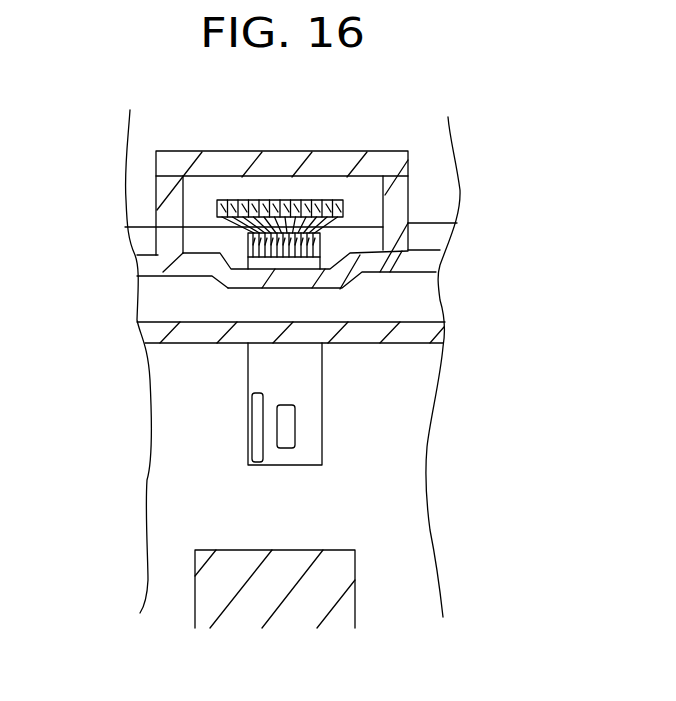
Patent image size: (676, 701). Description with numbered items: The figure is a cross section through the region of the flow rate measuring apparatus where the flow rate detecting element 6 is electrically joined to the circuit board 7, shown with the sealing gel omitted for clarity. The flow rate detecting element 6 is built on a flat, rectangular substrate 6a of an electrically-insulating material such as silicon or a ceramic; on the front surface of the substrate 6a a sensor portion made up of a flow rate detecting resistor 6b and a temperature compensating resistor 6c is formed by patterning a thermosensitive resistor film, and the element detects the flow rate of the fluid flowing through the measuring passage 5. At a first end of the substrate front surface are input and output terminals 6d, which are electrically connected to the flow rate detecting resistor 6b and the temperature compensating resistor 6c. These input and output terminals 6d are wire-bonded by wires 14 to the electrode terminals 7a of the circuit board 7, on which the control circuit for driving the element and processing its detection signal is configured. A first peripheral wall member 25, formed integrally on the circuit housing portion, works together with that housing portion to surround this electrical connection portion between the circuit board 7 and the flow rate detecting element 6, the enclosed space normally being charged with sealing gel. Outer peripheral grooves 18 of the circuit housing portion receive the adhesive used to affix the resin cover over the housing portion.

The circuit board 7 is at (178, 125).
The electrode terminals 7a is at (240, 204).
The wires 14 is at (236, 233).
The input and output terminals 6d is at (218, 254).
The first peripheral wall member 25 is at (392, 160).
The outer peripheral grooves 18 is at (418, 298).
The substrate 6a is at (305, 360).
The flow rate detecting element 6 is at (330, 402).
The flow rate detecting resistor 6b is at (289, 424).
The temperature compensating resistor 6c is at (260, 452).
The measuring passage 5 is at (350, 512).